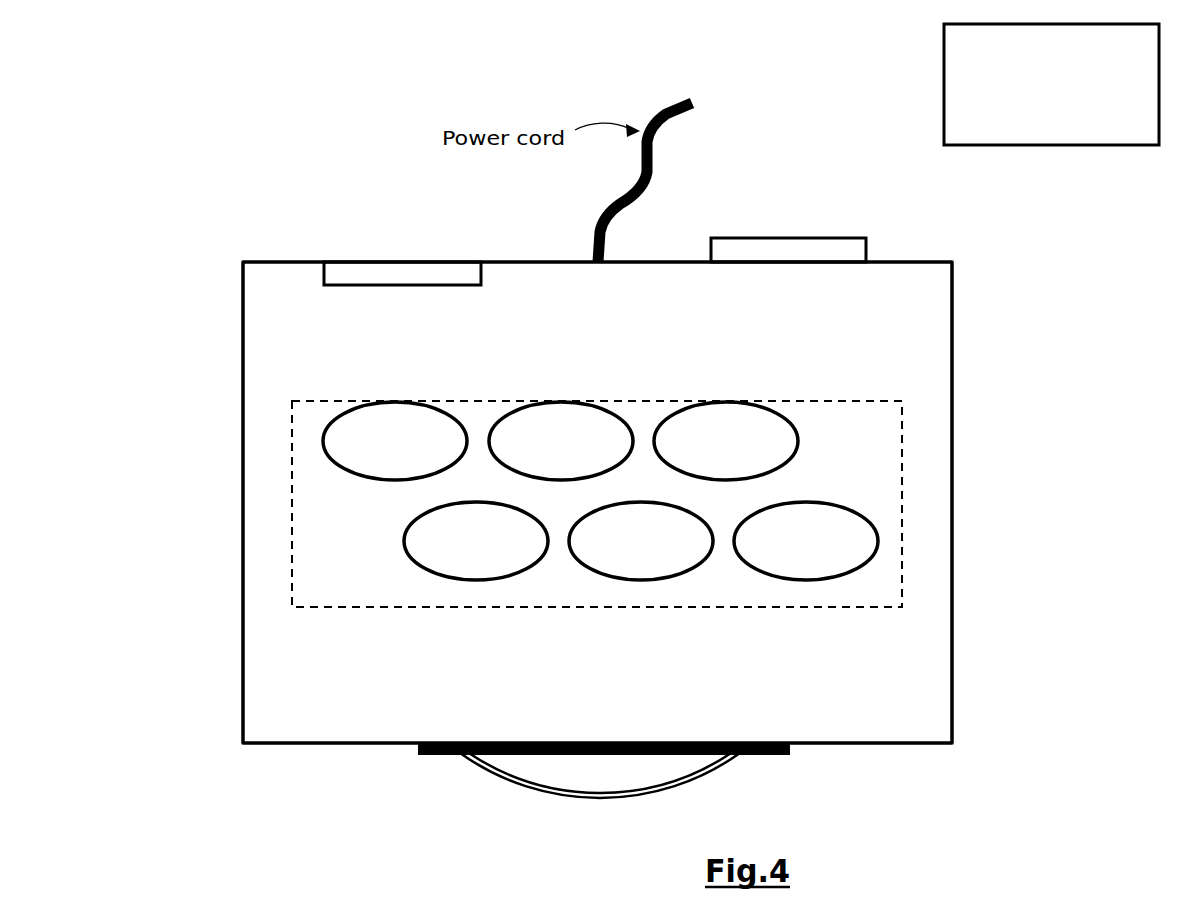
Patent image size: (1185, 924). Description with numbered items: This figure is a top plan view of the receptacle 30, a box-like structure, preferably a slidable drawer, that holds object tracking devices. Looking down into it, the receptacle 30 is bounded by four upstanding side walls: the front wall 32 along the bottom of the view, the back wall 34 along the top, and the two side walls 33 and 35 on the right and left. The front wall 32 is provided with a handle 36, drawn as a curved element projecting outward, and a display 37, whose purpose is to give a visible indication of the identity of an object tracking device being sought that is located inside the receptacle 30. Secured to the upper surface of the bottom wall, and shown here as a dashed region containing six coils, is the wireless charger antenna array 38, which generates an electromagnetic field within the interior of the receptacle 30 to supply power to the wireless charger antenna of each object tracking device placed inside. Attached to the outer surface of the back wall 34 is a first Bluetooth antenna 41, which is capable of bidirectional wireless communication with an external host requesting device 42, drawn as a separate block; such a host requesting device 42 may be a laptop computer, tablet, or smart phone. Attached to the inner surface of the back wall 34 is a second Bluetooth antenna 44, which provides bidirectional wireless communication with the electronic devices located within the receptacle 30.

The receptacle 30 is at (958, 338).
The front wall 32 is at (875, 750).
The side wall 33 is at (952, 590).
The back wall 34 is at (533, 262).
The side wall 35 is at (243, 440).
The handle 36 is at (483, 778).
The display 37 is at (662, 742).
The wireless charger antenna array 38 is at (910, 476).
The first Bluetooth antenna 41 is at (928, 215).
The host requesting device 42 is at (965, 82).
The second Bluetooth antenna 44 is at (545, 312).